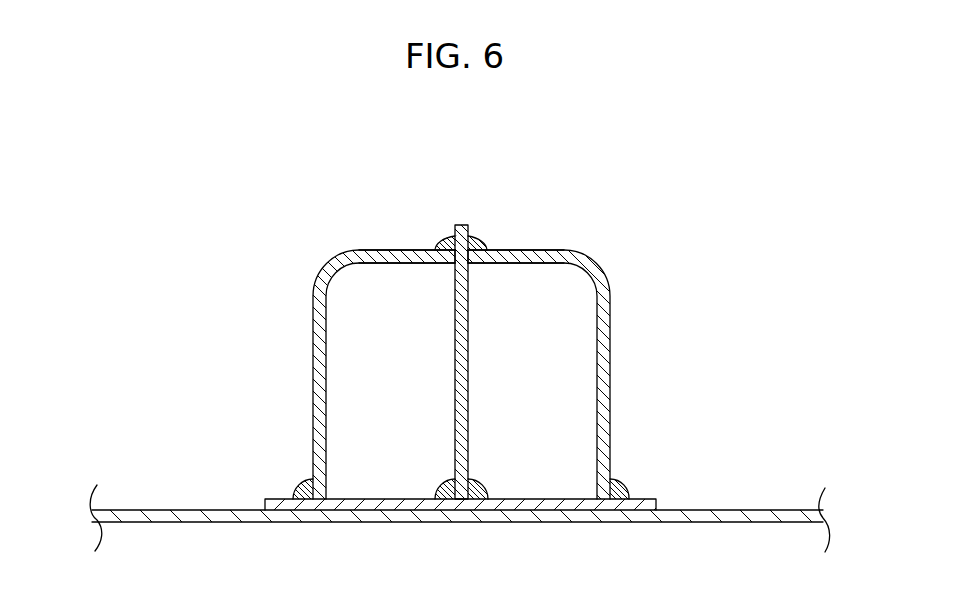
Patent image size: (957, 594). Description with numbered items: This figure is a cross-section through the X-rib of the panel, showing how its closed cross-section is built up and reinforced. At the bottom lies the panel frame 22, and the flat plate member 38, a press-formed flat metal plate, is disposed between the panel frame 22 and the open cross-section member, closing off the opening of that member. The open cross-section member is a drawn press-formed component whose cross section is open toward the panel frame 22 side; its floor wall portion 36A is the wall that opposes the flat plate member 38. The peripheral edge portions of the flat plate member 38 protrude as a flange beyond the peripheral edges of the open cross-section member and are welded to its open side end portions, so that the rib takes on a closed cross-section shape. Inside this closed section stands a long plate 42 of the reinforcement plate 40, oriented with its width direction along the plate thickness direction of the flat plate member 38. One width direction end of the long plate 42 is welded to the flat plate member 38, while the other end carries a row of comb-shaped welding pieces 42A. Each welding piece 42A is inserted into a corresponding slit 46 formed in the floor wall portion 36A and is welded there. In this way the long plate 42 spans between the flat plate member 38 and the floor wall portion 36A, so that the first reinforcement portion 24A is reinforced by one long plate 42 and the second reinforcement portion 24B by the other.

The panel frame 22 is at (767, 510).
The first reinforcement portion 24A is at (545, 374).
The second reinforcement portion 24B is at (614, 323).
The floor wall portion 36A is at (537, 250).
The flat plate member 38 is at (375, 498).
The reinforcement plate 40 is at (496, 321).
The long plate 42 is at (468, 347).
The welding piece 42A is at (463, 225).
The slit 46 is at (462, 263).